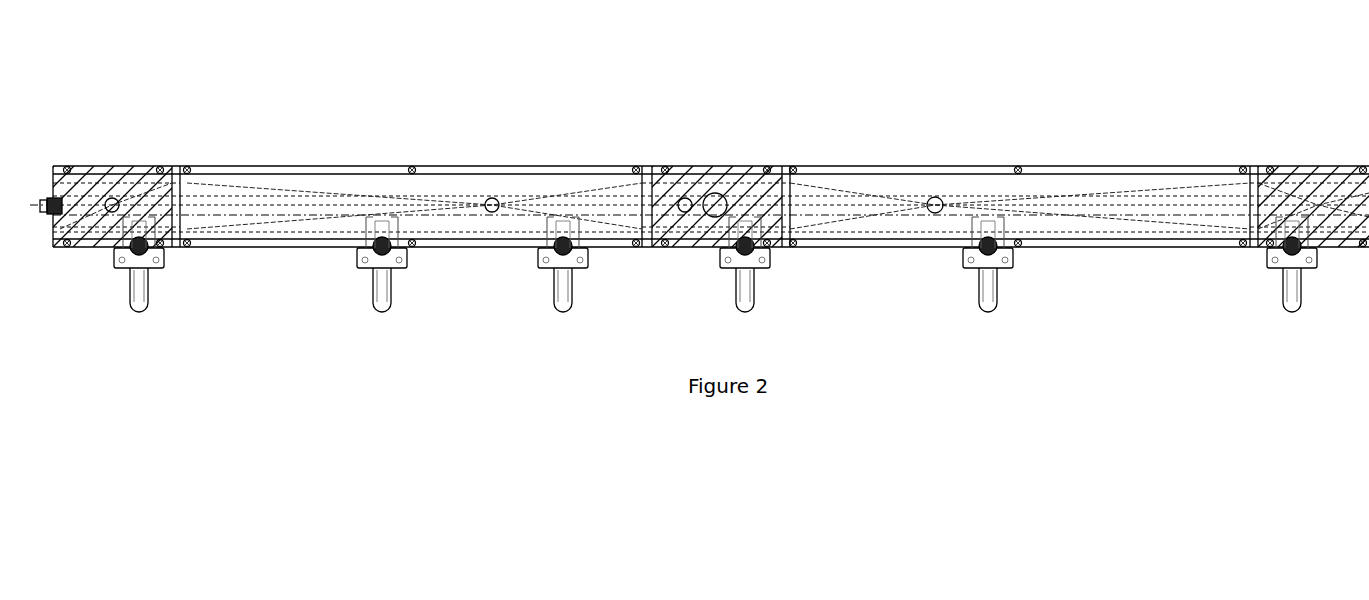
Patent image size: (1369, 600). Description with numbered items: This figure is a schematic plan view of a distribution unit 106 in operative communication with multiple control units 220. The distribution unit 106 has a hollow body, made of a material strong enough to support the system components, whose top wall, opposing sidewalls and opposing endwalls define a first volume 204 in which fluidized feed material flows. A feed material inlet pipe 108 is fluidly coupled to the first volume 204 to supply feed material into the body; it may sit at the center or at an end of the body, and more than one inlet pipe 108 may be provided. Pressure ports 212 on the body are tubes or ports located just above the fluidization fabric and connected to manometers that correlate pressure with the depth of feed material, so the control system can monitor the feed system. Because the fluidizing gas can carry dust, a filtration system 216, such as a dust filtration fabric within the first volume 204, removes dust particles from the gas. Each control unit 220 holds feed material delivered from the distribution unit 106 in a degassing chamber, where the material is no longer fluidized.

The distribution unit 106 is at (932, 109).
The feed material inlet pipe 108 is at (722, 194).
The first volume 204 is at (1043, 174).
The pressure ports 212 is at (113, 199).
The filtration system 216 is at (285, 192).
The control unit 220 is at (1013, 257).